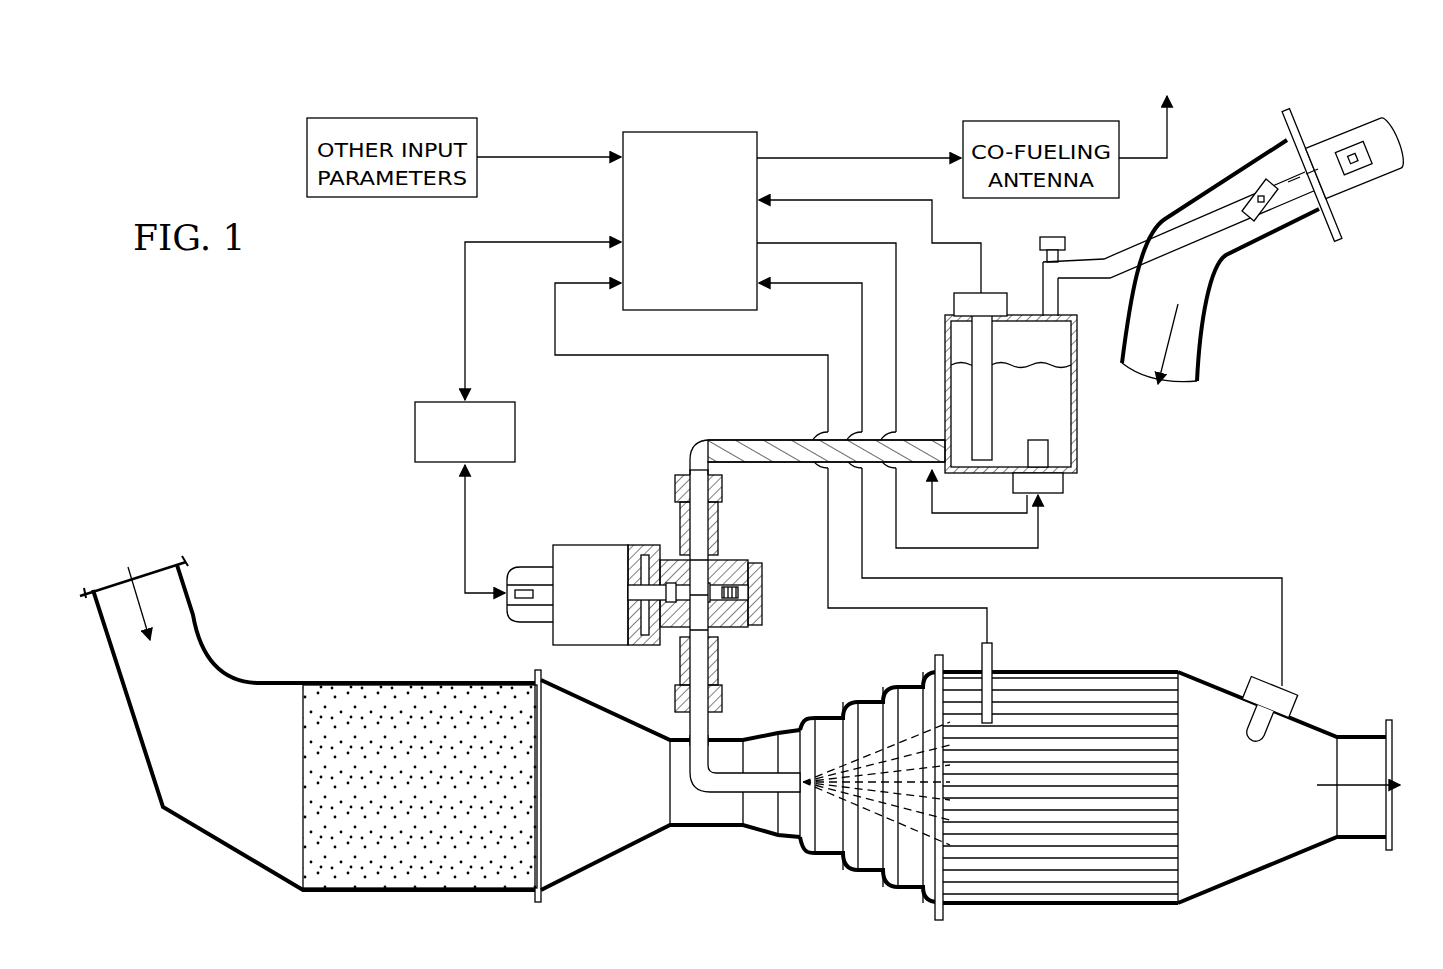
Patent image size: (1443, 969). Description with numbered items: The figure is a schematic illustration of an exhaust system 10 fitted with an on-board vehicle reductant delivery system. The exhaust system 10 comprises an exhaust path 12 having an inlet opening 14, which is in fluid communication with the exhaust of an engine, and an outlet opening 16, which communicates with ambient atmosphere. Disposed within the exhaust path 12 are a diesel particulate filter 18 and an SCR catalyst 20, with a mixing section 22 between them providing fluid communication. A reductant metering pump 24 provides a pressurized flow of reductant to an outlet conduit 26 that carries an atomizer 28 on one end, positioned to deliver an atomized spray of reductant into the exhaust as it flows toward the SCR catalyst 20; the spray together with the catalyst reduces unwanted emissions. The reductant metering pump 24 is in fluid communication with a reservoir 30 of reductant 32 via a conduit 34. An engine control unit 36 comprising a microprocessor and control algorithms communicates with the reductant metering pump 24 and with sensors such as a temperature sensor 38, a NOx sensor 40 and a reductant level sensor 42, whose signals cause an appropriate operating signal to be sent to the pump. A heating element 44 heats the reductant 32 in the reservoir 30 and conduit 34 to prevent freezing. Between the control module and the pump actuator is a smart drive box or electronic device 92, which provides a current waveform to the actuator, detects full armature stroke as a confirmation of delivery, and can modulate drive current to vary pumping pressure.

The exhaust system 10 is at (1316, 102).
The exhaust path 12 is at (216, 852).
The inlet opening 14 is at (152, 577).
The outlet opening 16 is at (1378, 808).
The diesel particulate filter 18 is at (410, 695).
The SCR catalyst 20 is at (1105, 690).
The mixing section 22 is at (680, 830).
The reductant metering pump 24 is at (570, 538).
The outlet conduit 26 is at (702, 724).
The atomizer 28 is at (795, 790).
The reservoir 30 is at (1066, 355).
The reductant 32 is at (1011, 387).
The conduit 34 is at (767, 440).
The engine control unit 36 is at (648, 132).
The temperature sensor 38 is at (993, 652).
The NOx sensor 40 is at (1291, 684).
The reductant level sensor 42 is at (990, 291).
The heating element 44 is at (1057, 493).
The electronic device 92 is at (440, 400).